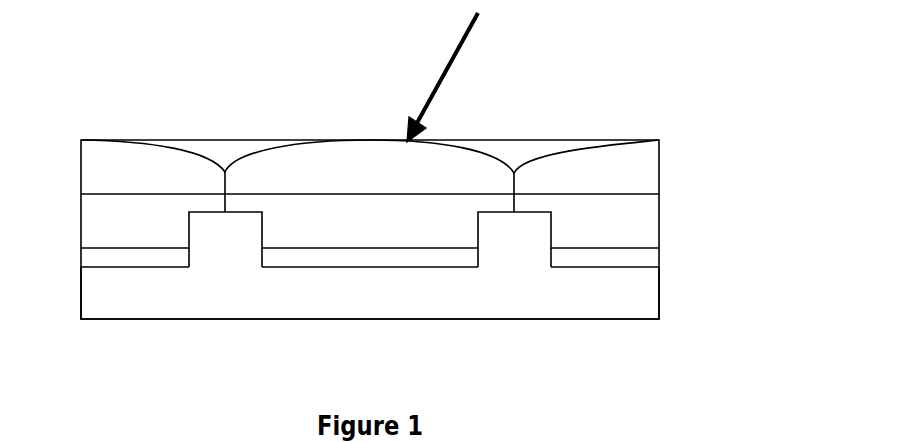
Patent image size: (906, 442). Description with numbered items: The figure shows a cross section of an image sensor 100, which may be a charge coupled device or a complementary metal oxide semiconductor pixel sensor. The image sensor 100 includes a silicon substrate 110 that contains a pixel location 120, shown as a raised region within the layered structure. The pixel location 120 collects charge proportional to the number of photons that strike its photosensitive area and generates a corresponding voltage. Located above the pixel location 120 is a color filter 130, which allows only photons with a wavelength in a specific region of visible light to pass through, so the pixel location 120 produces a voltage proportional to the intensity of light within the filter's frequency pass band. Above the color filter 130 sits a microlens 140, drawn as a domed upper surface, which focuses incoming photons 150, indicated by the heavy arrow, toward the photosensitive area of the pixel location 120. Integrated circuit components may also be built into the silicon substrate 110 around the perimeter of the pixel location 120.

The image sensor 100 is at (204, 109).
The silicon substrate 110 is at (570, 321).
The pixel location 120 is at (317, 267).
The color filter 130 is at (269, 194).
The microlens 140 is at (480, 150).
The photons 150 is at (442, 72).